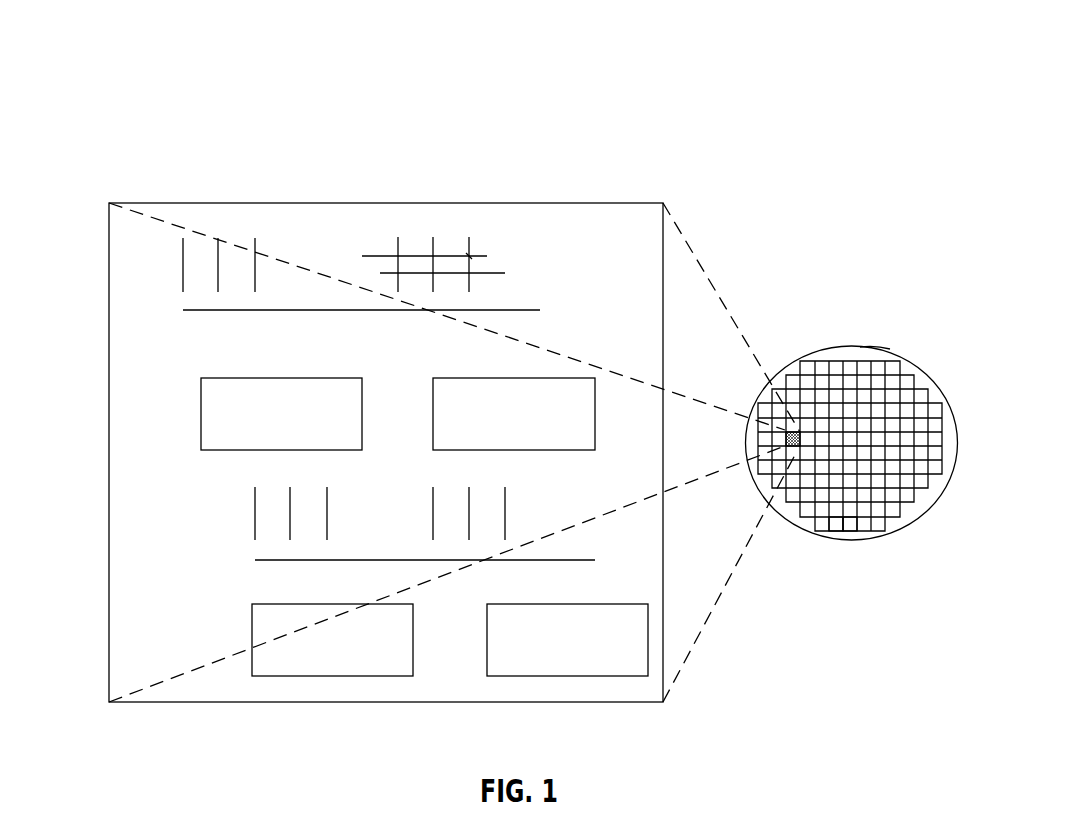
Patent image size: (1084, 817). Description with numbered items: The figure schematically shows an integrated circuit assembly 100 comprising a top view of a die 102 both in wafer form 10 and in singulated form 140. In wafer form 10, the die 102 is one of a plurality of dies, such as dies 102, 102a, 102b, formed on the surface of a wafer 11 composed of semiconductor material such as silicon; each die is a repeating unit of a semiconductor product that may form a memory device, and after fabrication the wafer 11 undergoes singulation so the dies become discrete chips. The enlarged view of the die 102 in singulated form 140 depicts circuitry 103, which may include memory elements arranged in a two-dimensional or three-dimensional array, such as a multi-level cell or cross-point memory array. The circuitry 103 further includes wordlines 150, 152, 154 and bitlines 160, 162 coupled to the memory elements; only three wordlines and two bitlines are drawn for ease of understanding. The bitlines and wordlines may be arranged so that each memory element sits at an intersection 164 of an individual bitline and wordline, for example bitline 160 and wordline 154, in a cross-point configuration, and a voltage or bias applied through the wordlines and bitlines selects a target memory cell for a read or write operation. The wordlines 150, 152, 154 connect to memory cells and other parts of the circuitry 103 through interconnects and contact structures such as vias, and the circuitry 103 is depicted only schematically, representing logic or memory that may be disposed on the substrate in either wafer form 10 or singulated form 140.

The integrated circuit assembly 100 is at (767, 55).
The singulated form 140 is at (649, 159).
The wafer form 10 is at (860, 326).
The wafer 11 is at (875, 348).
The die 102 is at (180, 703).
The die 102a is at (835, 523).
The die 102b is at (847, 523).
The circuitry 103 is at (250, 560).
The wordline 150 is at (398, 237).
The wordline 152 is at (433, 237).
The wordline 154 is at (469, 237).
The bitline 160 is at (487, 256).
The bitline 162 is at (505, 273).
The intersection 164 is at (471, 255).